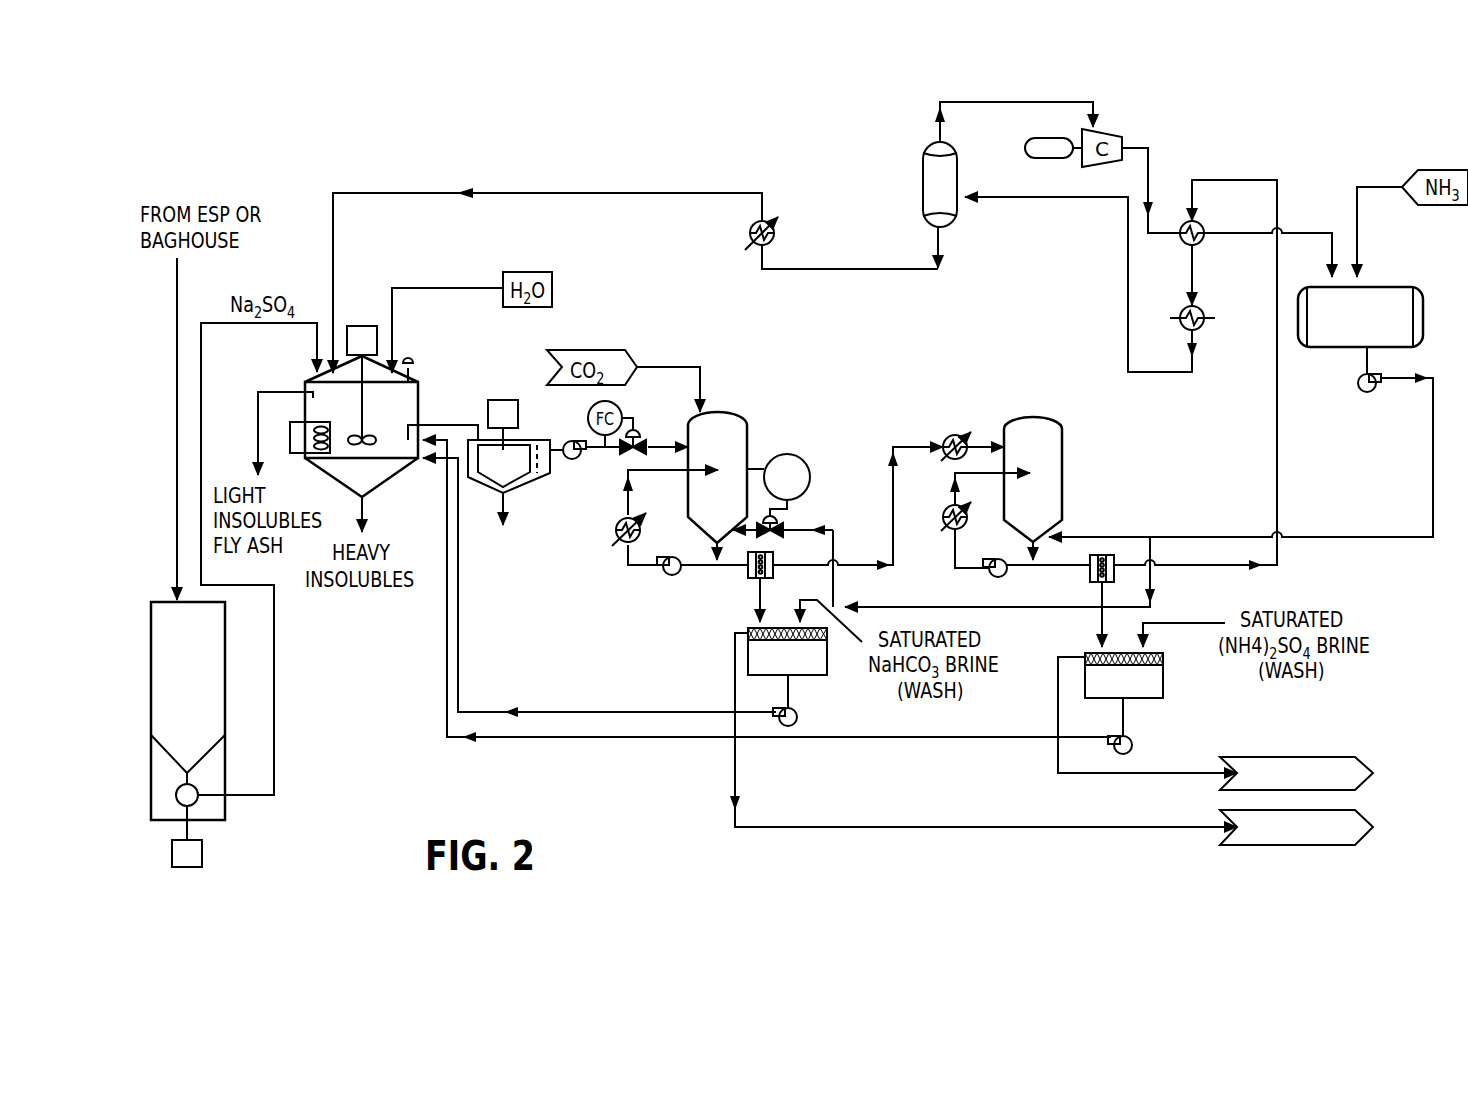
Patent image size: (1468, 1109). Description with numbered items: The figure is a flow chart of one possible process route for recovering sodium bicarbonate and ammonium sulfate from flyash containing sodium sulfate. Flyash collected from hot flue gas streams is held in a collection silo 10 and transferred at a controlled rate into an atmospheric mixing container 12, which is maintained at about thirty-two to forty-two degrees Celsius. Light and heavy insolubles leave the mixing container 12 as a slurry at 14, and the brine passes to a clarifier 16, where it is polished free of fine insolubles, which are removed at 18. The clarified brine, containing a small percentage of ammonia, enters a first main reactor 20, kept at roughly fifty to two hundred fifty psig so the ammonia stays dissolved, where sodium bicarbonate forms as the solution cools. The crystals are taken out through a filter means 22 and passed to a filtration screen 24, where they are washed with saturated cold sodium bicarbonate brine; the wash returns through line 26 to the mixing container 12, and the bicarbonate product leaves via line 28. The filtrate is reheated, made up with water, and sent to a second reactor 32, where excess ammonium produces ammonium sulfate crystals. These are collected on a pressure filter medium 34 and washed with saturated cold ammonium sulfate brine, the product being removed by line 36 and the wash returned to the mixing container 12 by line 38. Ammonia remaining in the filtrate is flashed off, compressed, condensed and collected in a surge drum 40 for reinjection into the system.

The collection silo 10 is at (225, 697).
The atmospheric mixing container 12 is at (382, 458).
The insolubles removal point 14 is at (258, 462).
The clarifier 16 is at (526, 446).
The fine insolubles removal point 18 is at (503, 492).
The first main reactor 20 is at (747, 430).
The filter means 22 is at (748, 572).
The filtration screen 24 is at (827, 675).
The wash return line 26 is at (613, 712).
The bicarbonate product line 28 is at (735, 768).
The second reactor 32 is at (1020, 417).
The pressure filter medium 34 is at (1163, 690).
The ammonium sulfate product line 36 is at (1058, 750).
The wash return line 38 is at (915, 738).
The surge drum 40 is at (1338, 348).